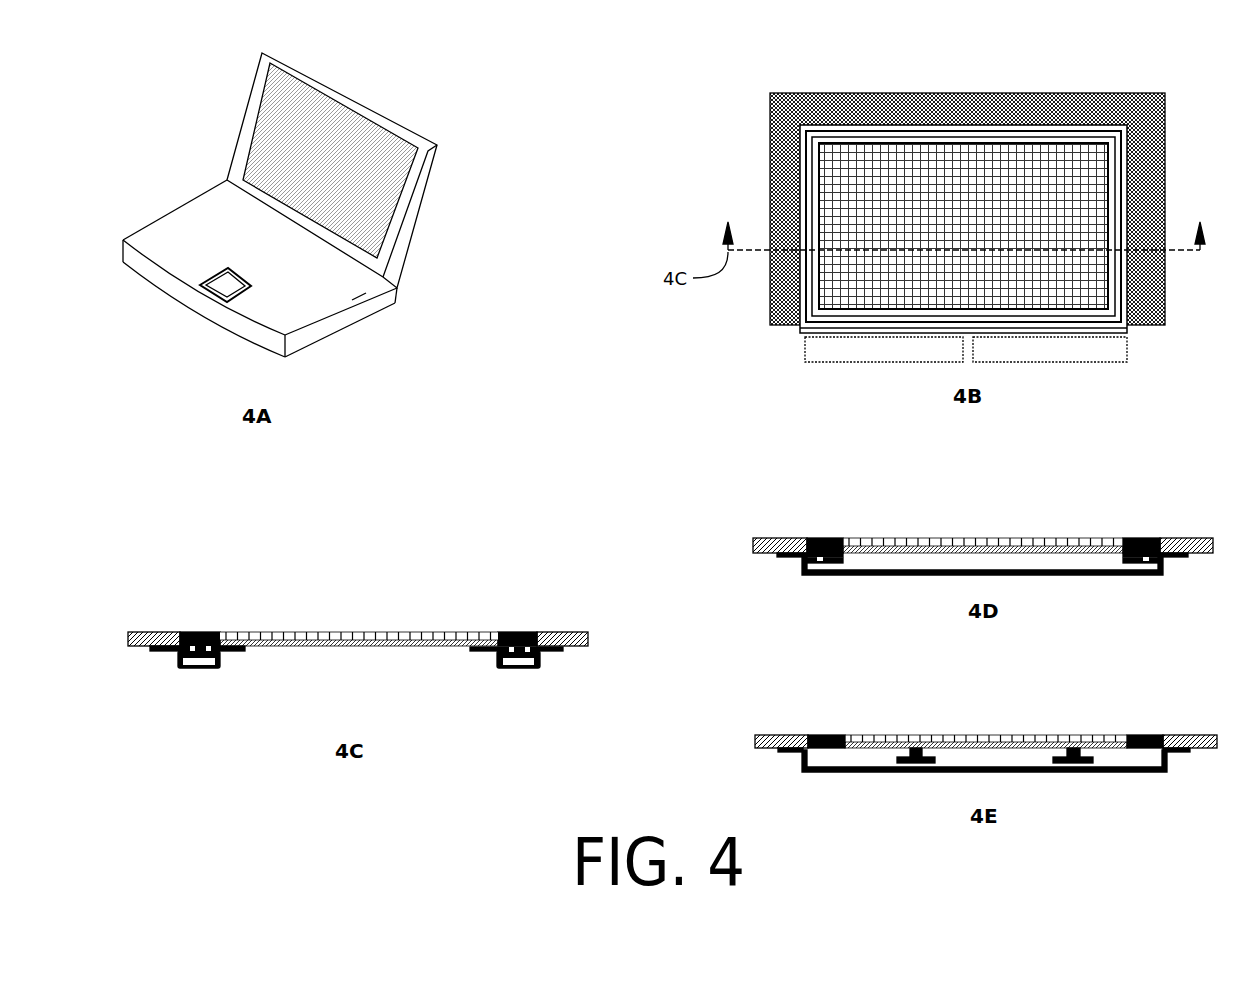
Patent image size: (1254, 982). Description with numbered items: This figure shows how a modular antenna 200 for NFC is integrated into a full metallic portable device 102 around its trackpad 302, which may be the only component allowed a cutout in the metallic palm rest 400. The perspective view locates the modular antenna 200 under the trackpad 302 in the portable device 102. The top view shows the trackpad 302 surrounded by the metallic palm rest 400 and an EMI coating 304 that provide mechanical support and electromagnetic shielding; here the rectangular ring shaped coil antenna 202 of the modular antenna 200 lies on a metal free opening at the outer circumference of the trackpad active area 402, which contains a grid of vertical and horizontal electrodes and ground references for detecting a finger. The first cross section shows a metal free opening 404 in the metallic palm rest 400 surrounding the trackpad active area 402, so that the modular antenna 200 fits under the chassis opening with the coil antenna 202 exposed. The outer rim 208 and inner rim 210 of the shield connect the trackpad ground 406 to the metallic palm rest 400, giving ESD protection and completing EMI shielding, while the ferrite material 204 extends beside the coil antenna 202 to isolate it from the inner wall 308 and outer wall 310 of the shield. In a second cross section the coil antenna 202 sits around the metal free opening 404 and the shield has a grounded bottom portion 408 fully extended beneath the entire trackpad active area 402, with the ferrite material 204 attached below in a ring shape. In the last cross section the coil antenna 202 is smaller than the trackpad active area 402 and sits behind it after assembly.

In FIG. 4A, the portable device 102 is at (183, 203).
In FIG. 4A, the metallic palm rest 400 is at (152, 243).
In FIG. 4C, the metallic palm rest 400 is at (157, 632).
In FIG. 4A, the modular antenna 200 is at (212, 278).
In FIG. 4B, the modular antenna 200 is at (1085, 127).
In FIG. 4A, the trackpad 302 is at (228, 283).
In FIG. 4B, the EMI coating 304 is at (825, 107).
In FIG. 4B, the coil antenna 202 is at (963, 226).
In FIG. 4D, the coil antenna 202 is at (1153, 553).
In FIG. 4E, the coil antenna 202 is at (913, 749).
In FIG. 4C, the trackpad active area 402 is at (317, 630).
In FIG. 4D, the trackpad active area 402 is at (1122, 537).
In FIG. 4E, the trackpad active area 402 is at (1125, 733).
In FIG. 4C, the metal free opening 404 is at (200, 632).
In FIG. 4D, the metal free opening 404 is at (1143, 539).
In FIG. 4E, the metal free opening 404 is at (1145, 735).
In FIG. 4C, the trackpad ground 406 is at (316, 648).
In FIG. 4C, the outer wall 310 is at (177, 651).
In FIG. 4C, the inner wall 308 is at (220, 651).
In FIG. 4C, the inner rim 210 is at (487, 652).
In FIG. 4C, the outer rim 208 is at (552, 652).
In FIG. 4C, the ferrite material 204 is at (511, 668).
In FIG. 4E, the ferrite material 204 is at (900, 758).
In FIG. 4D, the bottom portion 408 is at (1078, 576).
In FIG. 4E, the bottom portion 408 is at (1080, 773).